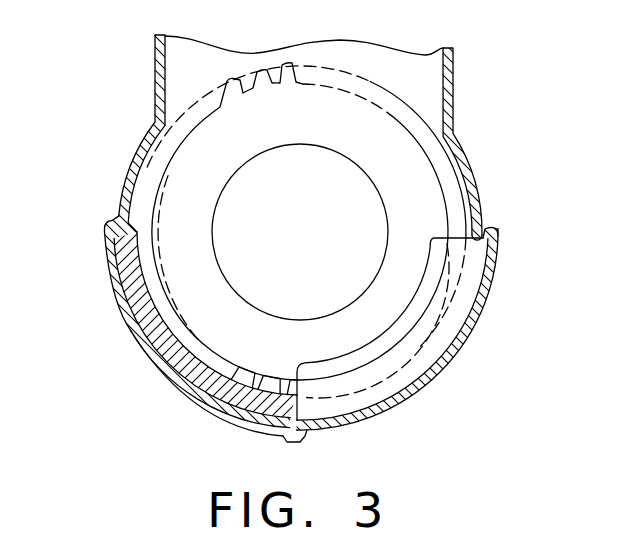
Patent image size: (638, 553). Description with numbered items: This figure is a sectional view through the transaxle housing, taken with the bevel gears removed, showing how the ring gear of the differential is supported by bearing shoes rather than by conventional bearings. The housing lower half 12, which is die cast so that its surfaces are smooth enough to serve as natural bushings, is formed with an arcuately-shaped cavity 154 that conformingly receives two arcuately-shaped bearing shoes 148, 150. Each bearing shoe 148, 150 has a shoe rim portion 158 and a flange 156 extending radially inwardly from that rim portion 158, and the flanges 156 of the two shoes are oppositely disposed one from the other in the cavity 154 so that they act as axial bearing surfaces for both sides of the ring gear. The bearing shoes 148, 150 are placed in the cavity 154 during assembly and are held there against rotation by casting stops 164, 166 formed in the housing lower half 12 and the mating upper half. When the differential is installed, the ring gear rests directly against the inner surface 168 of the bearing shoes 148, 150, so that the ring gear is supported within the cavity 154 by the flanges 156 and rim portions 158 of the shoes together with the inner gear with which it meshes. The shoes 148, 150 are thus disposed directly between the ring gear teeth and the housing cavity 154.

The housing lower half 12 is at (116, 307).
The bearing shoe 148 is at (167, 352).
The bearing shoe 150 is at (410, 378).
The cavity 154 is at (198, 392).
The flange 156 is at (480, 231).
The shoe rim portion 158 is at (138, 293).
The casting stop 164 is at (109, 221).
The casting stop 166 is at (494, 231).
The inner surface 168 is at (162, 327).